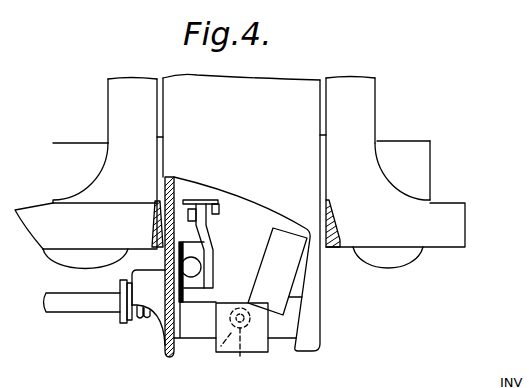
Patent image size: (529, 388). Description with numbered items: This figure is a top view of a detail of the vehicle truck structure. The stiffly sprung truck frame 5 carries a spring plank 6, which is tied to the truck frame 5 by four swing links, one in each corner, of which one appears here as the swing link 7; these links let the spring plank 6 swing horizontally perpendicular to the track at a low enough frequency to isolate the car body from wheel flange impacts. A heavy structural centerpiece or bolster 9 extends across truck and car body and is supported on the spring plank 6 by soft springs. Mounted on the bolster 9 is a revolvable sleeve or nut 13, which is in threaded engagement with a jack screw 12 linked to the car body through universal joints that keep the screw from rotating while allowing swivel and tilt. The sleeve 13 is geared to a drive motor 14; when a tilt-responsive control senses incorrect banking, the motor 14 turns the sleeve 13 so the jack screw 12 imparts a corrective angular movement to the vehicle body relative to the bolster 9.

The truck frame 5 is at (44, 238).
The spring plank 6 is at (422, 163).
The swing link 7 is at (213, 250).
The bolster 9 is at (305, 128).
The jack screw 12 is at (218, 346).
The revolvable sleeve or nut 13 is at (240, 355).
The drive motor 14 is at (287, 275).